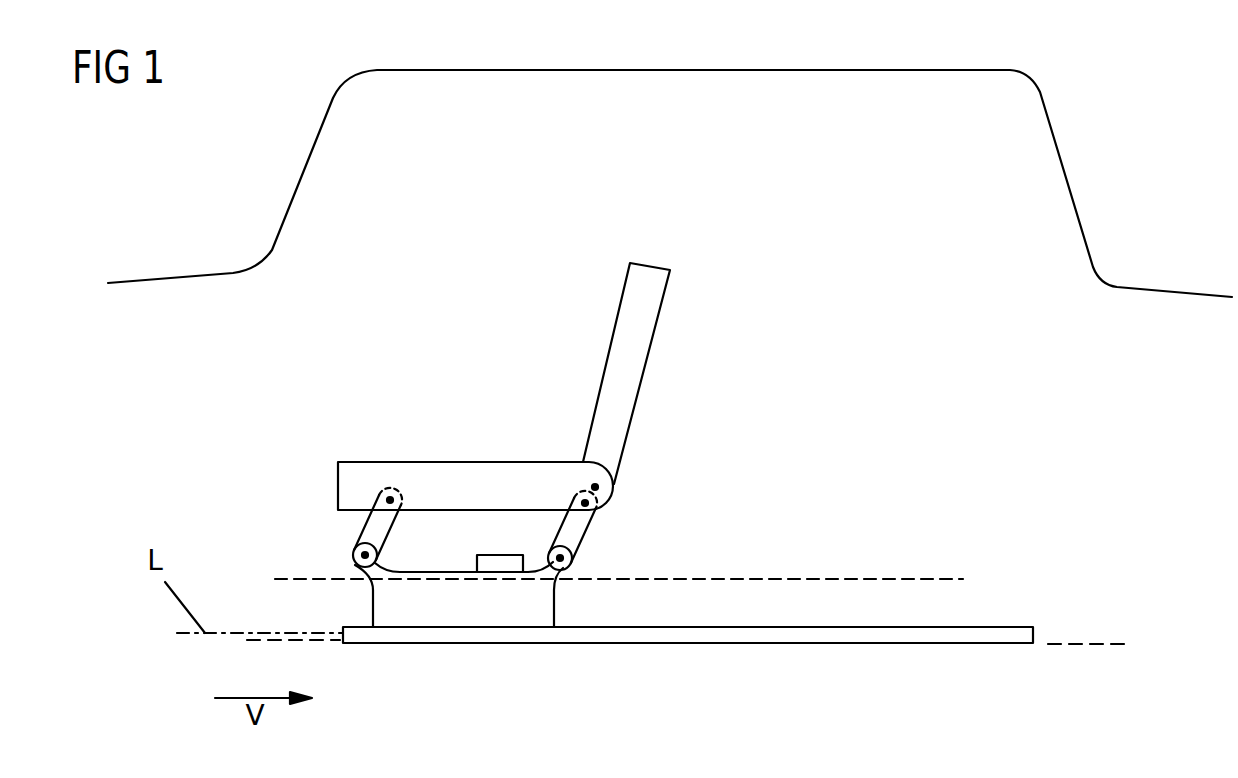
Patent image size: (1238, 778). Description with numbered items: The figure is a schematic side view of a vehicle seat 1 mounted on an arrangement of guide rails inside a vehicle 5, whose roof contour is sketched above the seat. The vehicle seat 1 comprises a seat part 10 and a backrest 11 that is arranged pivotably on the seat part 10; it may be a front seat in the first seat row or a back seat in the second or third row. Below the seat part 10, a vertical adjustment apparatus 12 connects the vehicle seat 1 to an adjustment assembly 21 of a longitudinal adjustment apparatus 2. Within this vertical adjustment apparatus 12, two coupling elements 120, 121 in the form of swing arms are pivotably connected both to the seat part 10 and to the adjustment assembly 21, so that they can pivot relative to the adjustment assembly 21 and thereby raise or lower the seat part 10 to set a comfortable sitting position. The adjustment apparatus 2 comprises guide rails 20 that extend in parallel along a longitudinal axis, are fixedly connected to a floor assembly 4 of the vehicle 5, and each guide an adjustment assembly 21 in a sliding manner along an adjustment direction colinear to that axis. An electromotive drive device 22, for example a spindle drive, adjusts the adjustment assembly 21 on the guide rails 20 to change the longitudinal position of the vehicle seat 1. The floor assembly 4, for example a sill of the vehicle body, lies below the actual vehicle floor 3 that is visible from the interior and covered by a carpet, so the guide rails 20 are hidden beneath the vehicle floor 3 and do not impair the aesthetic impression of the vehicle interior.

The vehicle seat 1 is at (567, 281).
The adjustment apparatus 2 is at (387, 657).
The vehicle floor 3 is at (907, 578).
The floor assembly 4 is at (1088, 643).
The vehicle 5 is at (809, 237).
The seat part 10 is at (458, 473).
The backrest 11 is at (622, 388).
The vertical adjustment apparatus 12 is at (322, 527).
The guide rails 20 is at (630, 643).
The adjustment assembly 21 is at (553, 603).
The electromotive drive device 22 is at (510, 567).
The coupling element 120 is at (378, 533).
The coupling element 121 is at (573, 535).